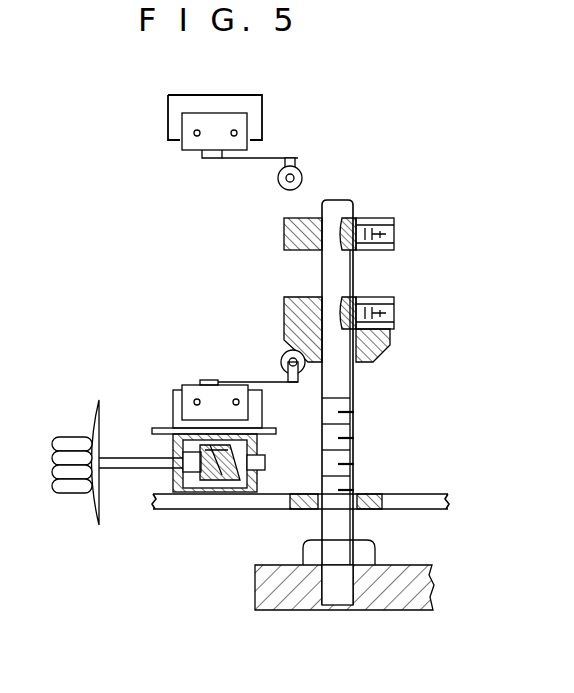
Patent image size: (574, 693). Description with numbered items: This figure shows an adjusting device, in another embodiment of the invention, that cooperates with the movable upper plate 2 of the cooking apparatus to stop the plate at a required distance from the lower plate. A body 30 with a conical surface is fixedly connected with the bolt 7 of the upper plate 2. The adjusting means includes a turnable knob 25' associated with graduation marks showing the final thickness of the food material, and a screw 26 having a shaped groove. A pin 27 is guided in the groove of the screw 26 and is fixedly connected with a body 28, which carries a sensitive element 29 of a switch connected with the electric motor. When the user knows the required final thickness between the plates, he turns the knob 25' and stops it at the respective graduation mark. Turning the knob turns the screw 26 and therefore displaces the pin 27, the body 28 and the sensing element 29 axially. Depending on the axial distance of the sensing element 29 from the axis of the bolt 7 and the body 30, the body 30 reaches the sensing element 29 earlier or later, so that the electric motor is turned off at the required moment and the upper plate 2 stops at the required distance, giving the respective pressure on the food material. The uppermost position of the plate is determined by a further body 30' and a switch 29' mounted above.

The movable upper plate 2 is at (257, 588).
The bolt 7 is at (356, 410).
The turnable knob 25' is at (111, 474).
The screw 26 is at (208, 492).
The pin 27 is at (218, 470).
The body 28 is at (173, 405).
The sensitive element 29 is at (263, 354).
The switch 29' is at (231, 150).
The body with conical surface 30 is at (363, 329).
The body 30' is at (362, 218).